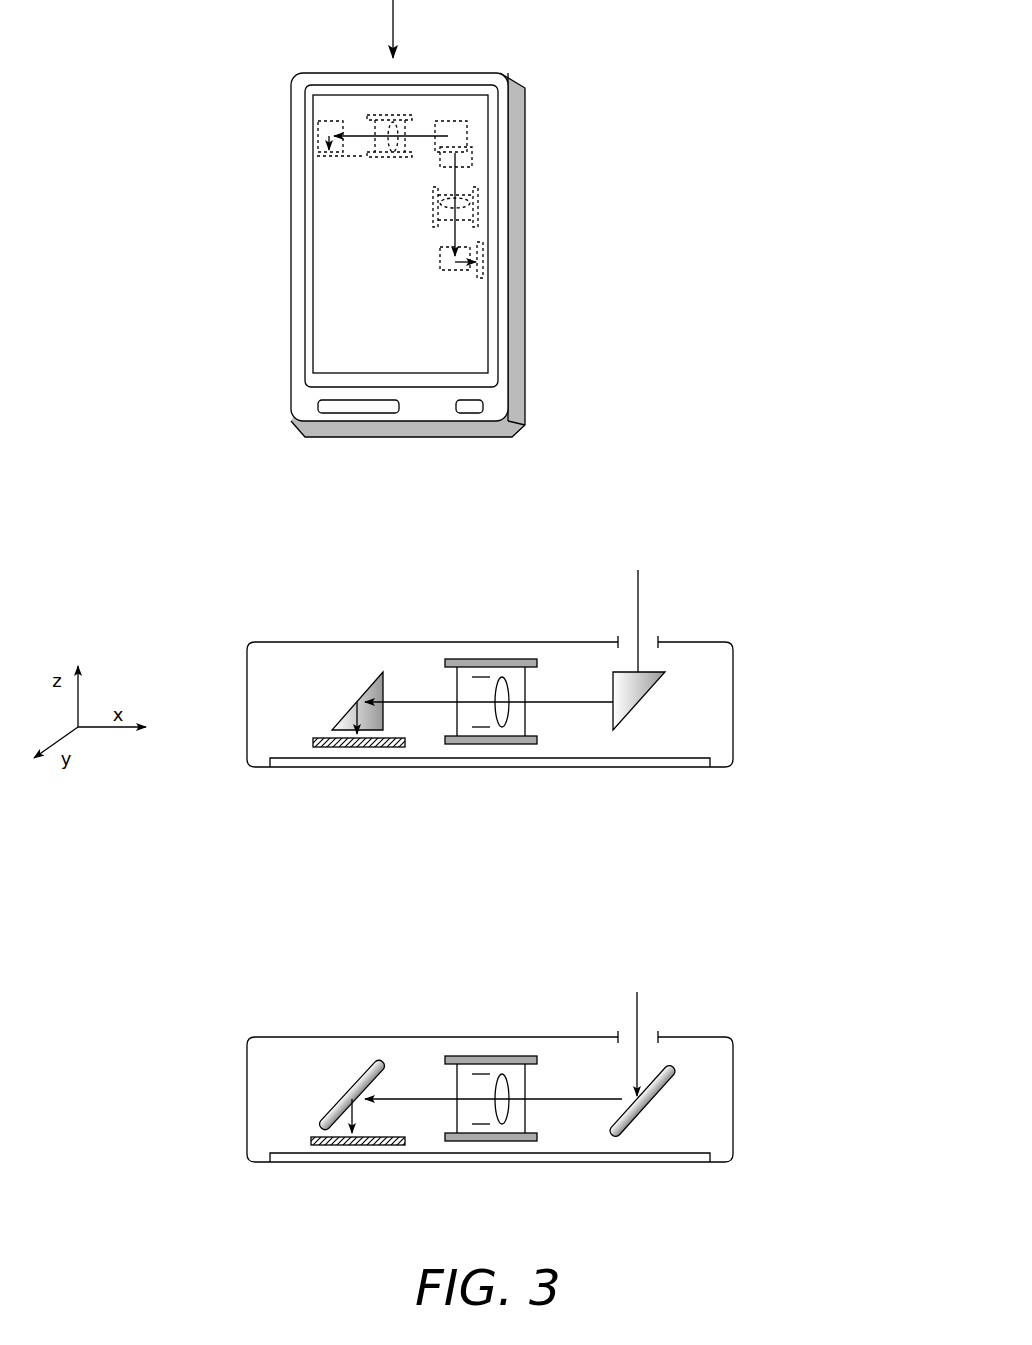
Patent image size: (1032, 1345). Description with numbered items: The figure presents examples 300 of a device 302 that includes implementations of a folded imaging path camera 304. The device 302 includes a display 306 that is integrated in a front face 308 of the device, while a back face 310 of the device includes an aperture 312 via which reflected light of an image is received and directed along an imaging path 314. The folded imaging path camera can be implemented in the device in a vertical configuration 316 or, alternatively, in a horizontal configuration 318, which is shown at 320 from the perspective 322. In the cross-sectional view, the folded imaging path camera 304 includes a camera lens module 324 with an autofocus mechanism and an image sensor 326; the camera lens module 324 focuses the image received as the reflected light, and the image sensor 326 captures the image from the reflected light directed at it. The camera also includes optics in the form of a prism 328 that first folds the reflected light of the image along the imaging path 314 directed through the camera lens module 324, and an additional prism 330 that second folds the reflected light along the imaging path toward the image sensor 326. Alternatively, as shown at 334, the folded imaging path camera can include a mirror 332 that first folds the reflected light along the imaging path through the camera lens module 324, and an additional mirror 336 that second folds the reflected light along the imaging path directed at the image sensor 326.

The examples 300 is at (812, 62).
The device 302 is at (387, 472).
The folded imaging path camera 304 is at (406, 659).
The display 306 is at (330, 265).
The front face 308 is at (305, 400).
The back face 310 is at (705, 640).
The aperture 312 is at (650, 630).
The imaging path 314 is at (619, 564).
The vertical configuration 316 is at (470, 135).
The horizontal configuration 318 is at (351, 120).
The view of horizontal configuration 320 is at (572, 517).
The perspective 322 is at (419, 29).
The camera lens module 324 is at (515, 732).
The image sensor 326 is at (385, 747).
The prism 328 is at (630, 715).
The additional prism 330 is at (365, 695).
The mirror 332 is at (637, 1117).
The view of mirror implementation 334 is at (436, 956).
The additional mirror 336 is at (353, 1085).